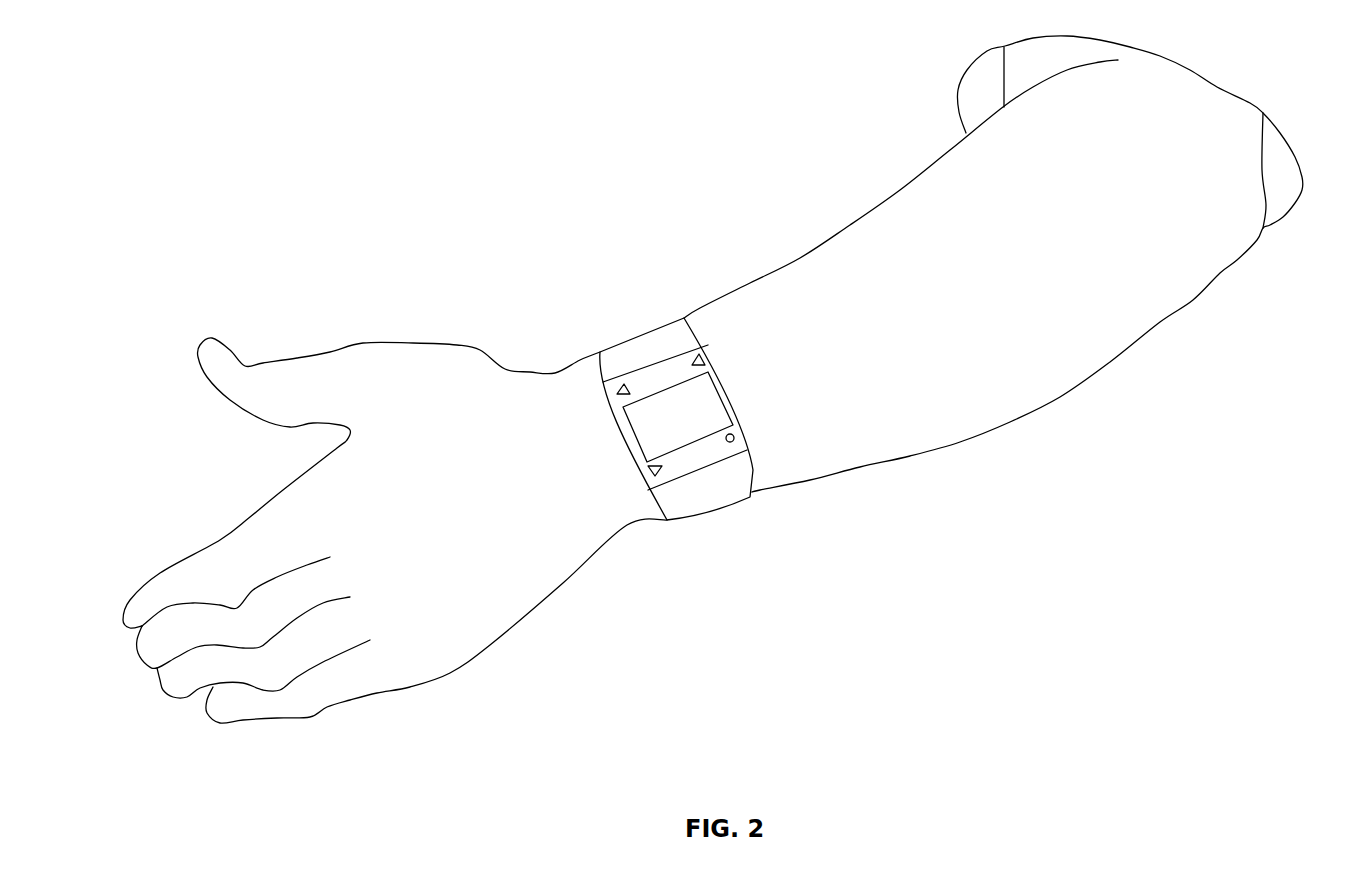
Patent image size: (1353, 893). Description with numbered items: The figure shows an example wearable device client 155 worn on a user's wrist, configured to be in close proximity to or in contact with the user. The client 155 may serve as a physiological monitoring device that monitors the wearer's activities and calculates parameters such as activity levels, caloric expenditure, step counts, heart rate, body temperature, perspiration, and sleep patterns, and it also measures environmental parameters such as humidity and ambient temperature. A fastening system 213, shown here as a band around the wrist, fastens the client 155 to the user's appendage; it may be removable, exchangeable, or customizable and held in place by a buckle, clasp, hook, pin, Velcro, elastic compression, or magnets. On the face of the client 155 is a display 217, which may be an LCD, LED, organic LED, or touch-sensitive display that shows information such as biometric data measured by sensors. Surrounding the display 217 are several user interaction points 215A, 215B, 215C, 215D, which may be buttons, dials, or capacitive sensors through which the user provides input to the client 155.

The wearable device client 155 is at (775, 590).
The fastening system 213 is at (657, 328).
The display 217 is at (663, 427).
The user interaction point 215A is at (607, 382).
The user interaction point 215B is at (650, 472).
The user interaction point 215C is at (703, 345).
The user interaction point 215D is at (737, 433).